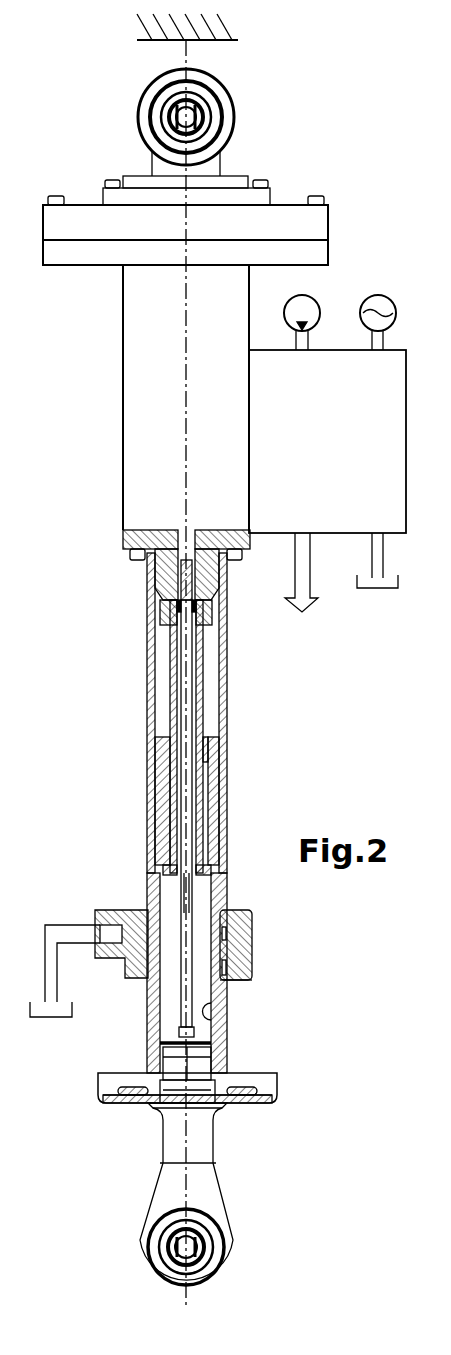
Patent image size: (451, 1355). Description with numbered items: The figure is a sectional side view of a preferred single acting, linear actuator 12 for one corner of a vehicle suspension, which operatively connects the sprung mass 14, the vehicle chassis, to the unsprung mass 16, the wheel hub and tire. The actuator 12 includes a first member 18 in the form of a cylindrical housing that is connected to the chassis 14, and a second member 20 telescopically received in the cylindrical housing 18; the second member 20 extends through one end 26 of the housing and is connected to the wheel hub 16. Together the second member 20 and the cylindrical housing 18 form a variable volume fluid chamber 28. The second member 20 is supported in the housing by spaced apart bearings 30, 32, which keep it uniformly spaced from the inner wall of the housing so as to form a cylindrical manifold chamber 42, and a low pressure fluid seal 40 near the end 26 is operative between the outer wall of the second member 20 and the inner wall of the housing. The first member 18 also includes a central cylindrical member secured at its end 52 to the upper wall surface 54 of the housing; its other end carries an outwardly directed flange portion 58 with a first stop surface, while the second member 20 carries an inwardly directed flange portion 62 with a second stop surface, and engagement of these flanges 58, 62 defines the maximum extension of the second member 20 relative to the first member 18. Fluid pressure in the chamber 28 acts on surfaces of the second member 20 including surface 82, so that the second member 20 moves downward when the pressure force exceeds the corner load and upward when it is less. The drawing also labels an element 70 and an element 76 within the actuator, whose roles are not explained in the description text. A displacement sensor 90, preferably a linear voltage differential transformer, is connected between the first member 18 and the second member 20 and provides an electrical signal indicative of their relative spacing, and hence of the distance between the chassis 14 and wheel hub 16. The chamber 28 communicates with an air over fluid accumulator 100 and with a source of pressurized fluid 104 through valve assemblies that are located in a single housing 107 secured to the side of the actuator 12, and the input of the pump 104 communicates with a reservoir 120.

The actuator 12 is at (107, 393).
The sprung mass 14 is at (215, 40).
The unsprung mass 16 is at (197, 1250).
The first member 18 is at (148, 703).
The second member 20 is at (152, 1012).
The end of the cylindrical housing 26 is at (228, 982).
The variable volume fluid chamber 28 is at (212, 702).
The bearing 30 is at (155, 752).
The bearing 32 is at (146, 930).
The low pressure fluid seal 40 is at (245, 963).
The cylindrical manifold chamber 42 is at (220, 815).
The end of the central cylindrical member 52 is at (200, 615).
The upper wall surface 54 is at (175, 600).
The outwardly directed flange portion 58 is at (213, 875).
The inwardly directed flange portion 62 is at (205, 742).
The tube wall 70 is at (170, 658).
The seal 76 is at (213, 1022).
The surface 82 is at (205, 1083).
The displacement sensor 90 is at (183, 823).
The air over fluid accumulator 100 is at (377, 300).
The source of pressurized fluid 104 is at (308, 307).
The housing 107 is at (337, 503).
The reservoir 120 is at (370, 588).